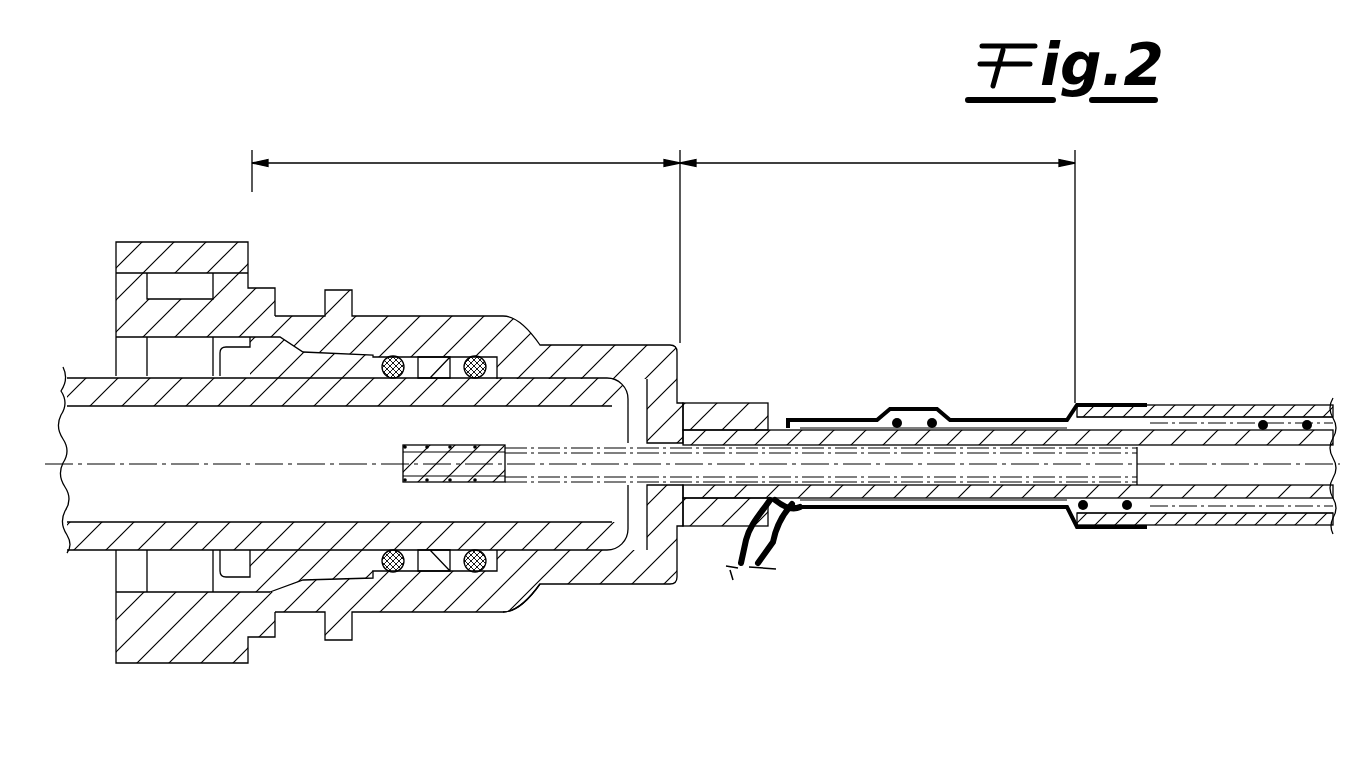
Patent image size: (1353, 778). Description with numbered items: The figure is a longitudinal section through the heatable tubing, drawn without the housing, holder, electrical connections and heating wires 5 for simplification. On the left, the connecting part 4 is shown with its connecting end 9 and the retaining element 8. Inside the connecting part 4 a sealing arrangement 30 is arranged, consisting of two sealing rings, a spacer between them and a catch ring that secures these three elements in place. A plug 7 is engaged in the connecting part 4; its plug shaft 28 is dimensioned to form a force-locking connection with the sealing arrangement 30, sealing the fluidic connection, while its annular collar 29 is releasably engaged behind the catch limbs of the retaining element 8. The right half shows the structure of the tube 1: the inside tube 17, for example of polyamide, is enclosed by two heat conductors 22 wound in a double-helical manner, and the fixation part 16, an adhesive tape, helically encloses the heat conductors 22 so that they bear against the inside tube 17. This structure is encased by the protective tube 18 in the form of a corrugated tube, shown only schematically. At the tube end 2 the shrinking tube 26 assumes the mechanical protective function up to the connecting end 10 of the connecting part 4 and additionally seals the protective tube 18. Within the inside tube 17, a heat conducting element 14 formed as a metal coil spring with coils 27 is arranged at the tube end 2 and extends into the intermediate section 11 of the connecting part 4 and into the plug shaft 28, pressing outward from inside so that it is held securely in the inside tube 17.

The tube 1 is at (1290, 553).
The tube end 2 is at (845, 163).
The connecting part 4 is at (490, 670).
The heating wires 5 is at (768, 592).
The plug 7 is at (100, 350).
The retaining element 8 is at (176, 247).
The connecting end 9 is at (160, 655).
The connecting end 10 is at (733, 413).
The intermediate section 11 is at (463, 163).
The heat conducting element 14 is at (548, 487).
The fixation part 16 is at (1210, 505).
The inside tube 17 is at (753, 430).
The protective tube 18 is at (1180, 405).
The heat conductors 22 is at (1305, 410).
The shrinking tube 26 is at (955, 505).
The coils 27 is at (440, 490).
The plug shaft 28 is at (553, 390).
The annular collar 29 is at (232, 592).
The sealing arrangement 30 is at (437, 332).